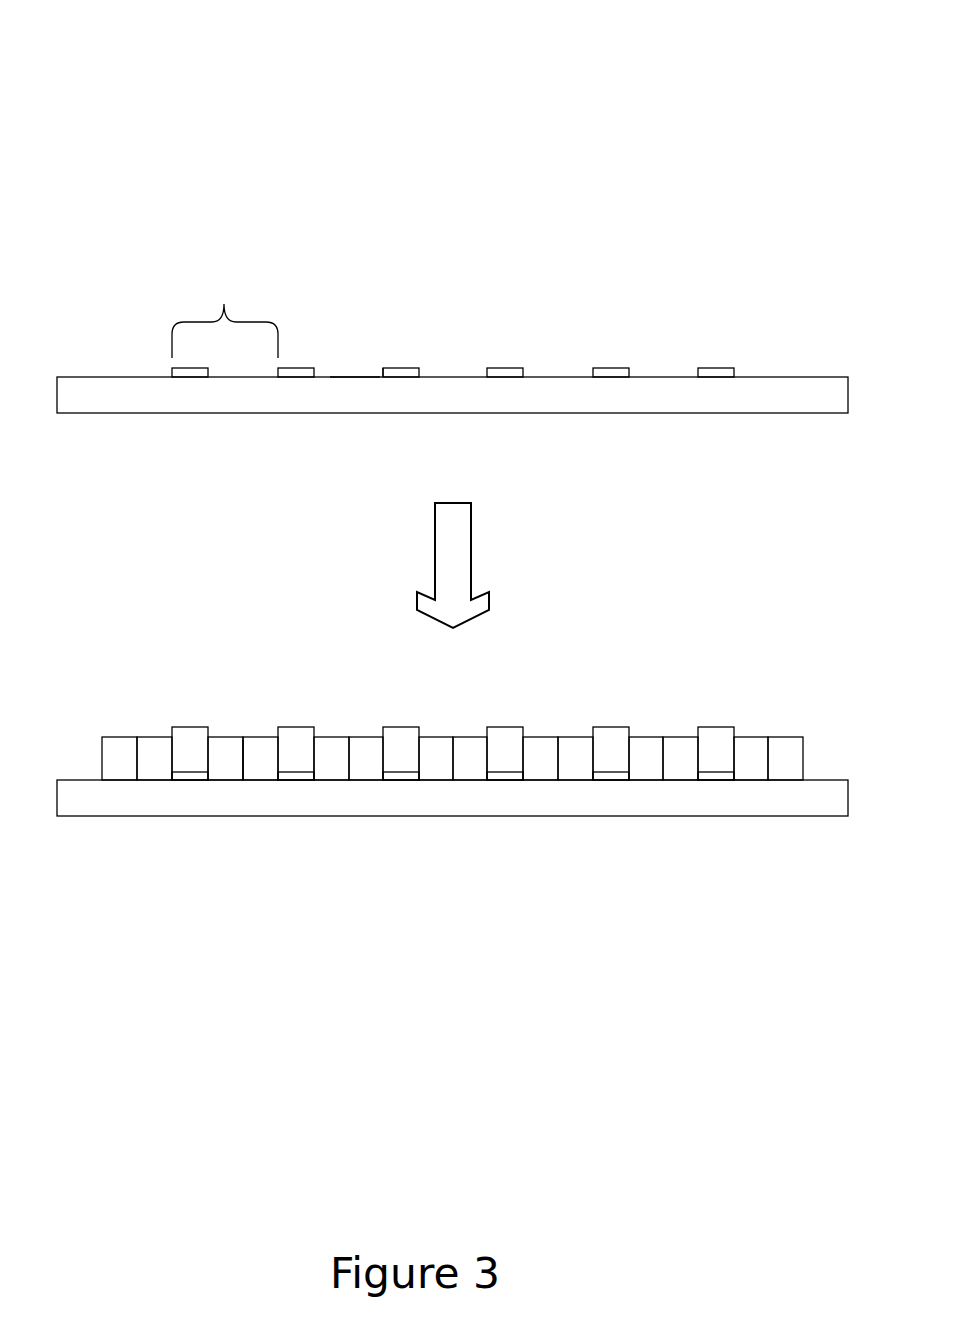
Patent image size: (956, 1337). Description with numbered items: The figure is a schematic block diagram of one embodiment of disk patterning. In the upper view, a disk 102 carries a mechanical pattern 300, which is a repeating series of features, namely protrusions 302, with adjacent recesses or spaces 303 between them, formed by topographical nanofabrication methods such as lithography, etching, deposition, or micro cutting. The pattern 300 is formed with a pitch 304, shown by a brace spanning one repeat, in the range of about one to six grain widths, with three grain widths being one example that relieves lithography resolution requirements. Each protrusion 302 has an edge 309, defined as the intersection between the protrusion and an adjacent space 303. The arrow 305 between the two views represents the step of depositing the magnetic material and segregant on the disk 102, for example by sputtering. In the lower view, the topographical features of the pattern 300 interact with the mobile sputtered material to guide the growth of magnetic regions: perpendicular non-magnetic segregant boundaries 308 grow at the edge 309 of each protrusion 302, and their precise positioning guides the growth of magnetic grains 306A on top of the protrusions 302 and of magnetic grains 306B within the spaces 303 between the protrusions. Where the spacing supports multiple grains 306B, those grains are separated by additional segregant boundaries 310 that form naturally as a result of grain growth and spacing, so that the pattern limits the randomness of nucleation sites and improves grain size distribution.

The mechanical pattern 300 is at (143, 106).
The disk 102 is at (100, 413).
The protrusion 302 is at (398, 367).
The space 303 is at (333, 375).
The pitch 304 is at (225, 315).
The arrow 305 is at (471, 565).
The magnetic grains 306A is at (190, 745).
The magnetic grains 306B is at (250, 745).
The segregant boundaries 308 is at (210, 762).
The edge 309 is at (383, 368).
The segregant boundaries 310 is at (245, 757).